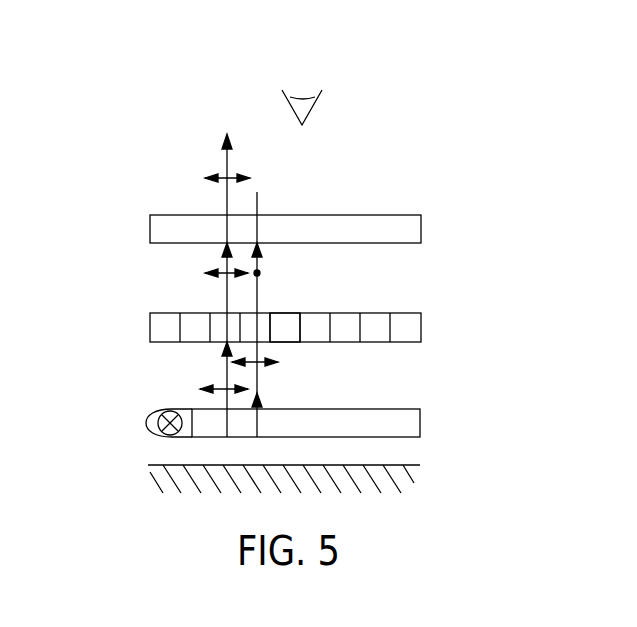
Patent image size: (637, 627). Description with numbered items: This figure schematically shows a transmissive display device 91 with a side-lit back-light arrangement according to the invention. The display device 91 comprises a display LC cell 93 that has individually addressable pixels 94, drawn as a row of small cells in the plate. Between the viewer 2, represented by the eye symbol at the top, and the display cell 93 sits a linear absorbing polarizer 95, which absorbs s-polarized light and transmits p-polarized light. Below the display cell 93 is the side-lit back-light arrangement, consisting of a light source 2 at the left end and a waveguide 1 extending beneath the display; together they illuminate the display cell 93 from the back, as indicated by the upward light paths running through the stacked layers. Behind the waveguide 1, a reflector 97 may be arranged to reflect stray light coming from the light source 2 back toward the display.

The display device 91 is at (100, 243).
The linear absorbing polarizer 95 is at (408, 230).
The display LC cell 93 is at (408, 327).
The pixel 94 is at (292, 340).
The waveguide 1 is at (185, 393).
The reflector 97 is at (410, 478).
The viewer / light source 2 is at (321, 92).